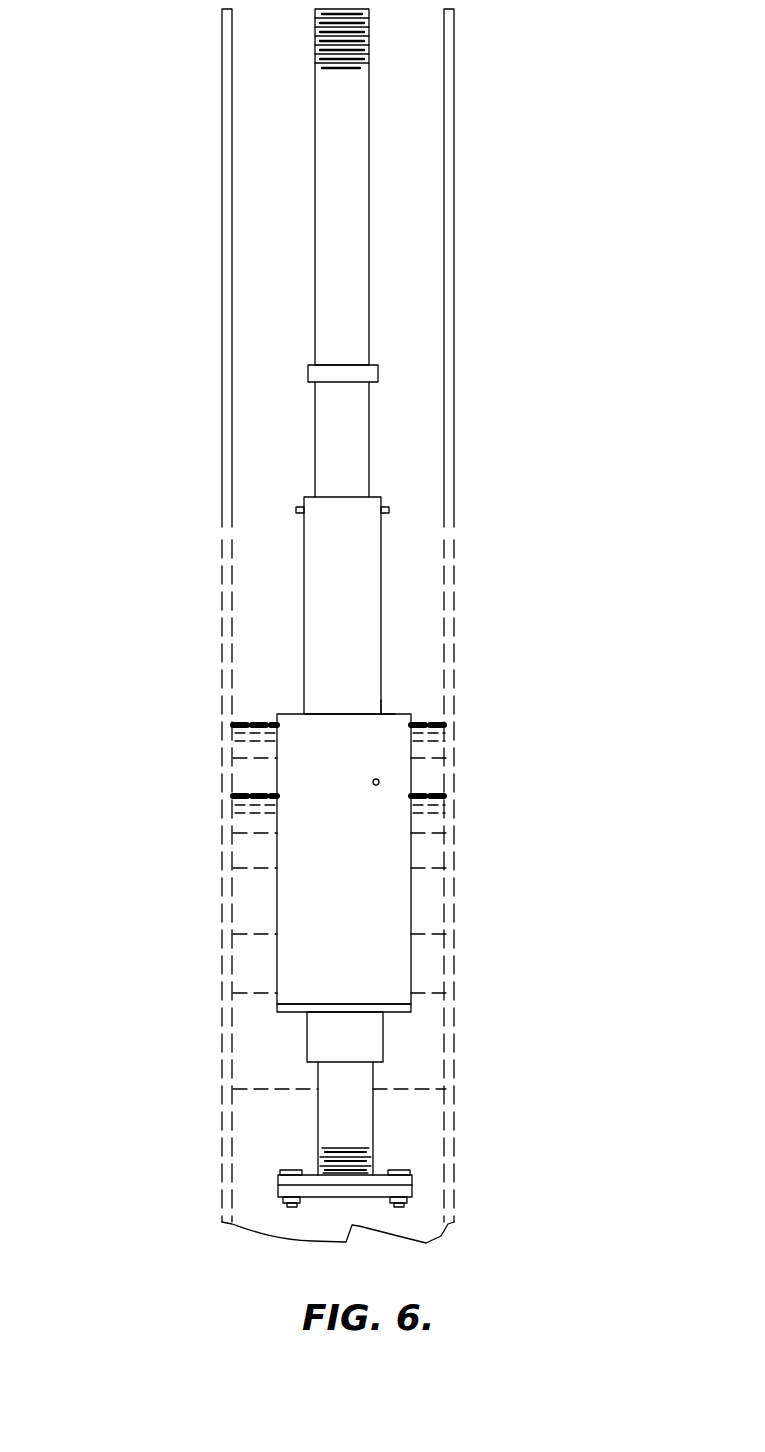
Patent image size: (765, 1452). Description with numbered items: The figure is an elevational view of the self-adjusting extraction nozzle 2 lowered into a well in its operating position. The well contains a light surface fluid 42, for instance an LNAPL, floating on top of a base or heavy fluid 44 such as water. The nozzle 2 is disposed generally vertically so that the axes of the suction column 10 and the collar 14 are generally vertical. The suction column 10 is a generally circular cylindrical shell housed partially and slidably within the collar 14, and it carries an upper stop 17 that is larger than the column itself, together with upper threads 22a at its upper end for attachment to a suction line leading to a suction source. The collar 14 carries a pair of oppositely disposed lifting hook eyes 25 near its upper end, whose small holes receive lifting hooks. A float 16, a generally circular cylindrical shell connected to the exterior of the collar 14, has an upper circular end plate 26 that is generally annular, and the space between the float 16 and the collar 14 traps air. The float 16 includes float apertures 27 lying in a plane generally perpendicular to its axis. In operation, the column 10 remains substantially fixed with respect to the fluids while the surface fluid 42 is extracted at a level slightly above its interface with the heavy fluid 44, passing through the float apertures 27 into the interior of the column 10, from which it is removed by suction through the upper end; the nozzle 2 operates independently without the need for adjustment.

The self-adjusting extraction nozzle 2 is at (398, 158).
The suction column 10 is at (330, 160).
The upper threads 22a is at (330, 46).
The upper stop 17 is at (310, 380).
The lifting hook eyes 25 is at (297, 510).
The collar 14 is at (330, 622).
The upper circular end plate 26 is at (385, 713).
The light surface fluid 42 is at (440, 737).
The float apertures 27 is at (379, 782).
The float 16 is at (322, 887).
The heavy fluid 44 is at (430, 888).